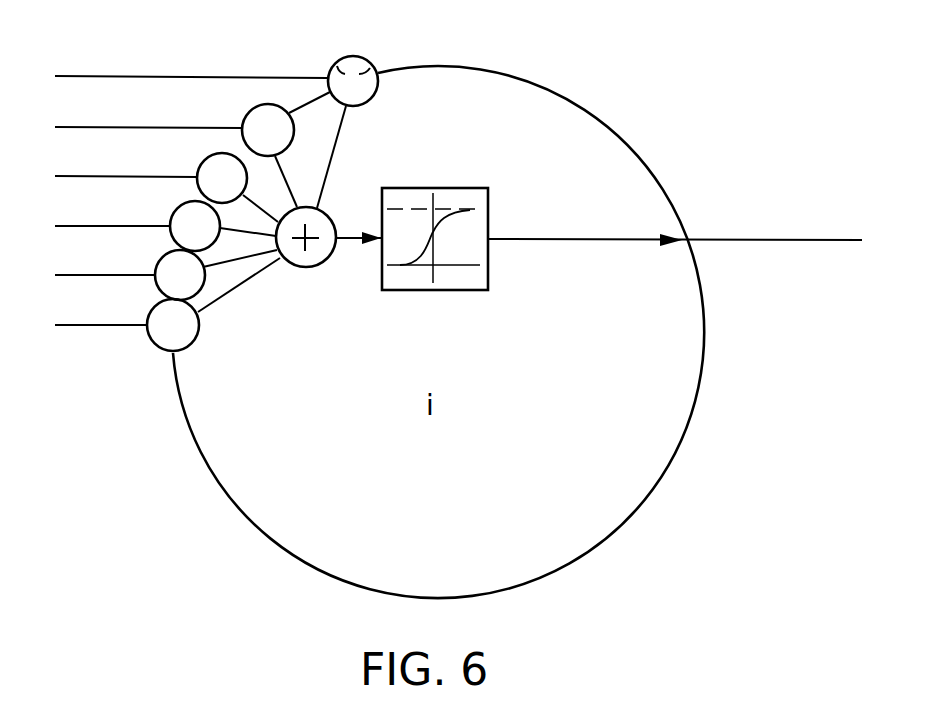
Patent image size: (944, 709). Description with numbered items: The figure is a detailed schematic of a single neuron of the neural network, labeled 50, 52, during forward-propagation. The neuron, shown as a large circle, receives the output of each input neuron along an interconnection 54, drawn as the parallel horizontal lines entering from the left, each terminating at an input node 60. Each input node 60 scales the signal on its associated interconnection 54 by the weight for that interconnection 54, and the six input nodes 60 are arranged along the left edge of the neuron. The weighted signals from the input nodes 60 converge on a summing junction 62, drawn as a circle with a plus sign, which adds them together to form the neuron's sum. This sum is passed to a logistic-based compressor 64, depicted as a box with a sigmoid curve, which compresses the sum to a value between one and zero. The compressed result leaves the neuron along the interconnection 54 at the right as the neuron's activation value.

The hidden neuron 50 is at (468, 330).
The neuron 52 is at (636, 106).
The interconnection 54 is at (121, 54).
The input node 60 is at (220, 157).
The summing junction 62 is at (314, 268).
The logistic-based compressor 64 is at (412, 291).